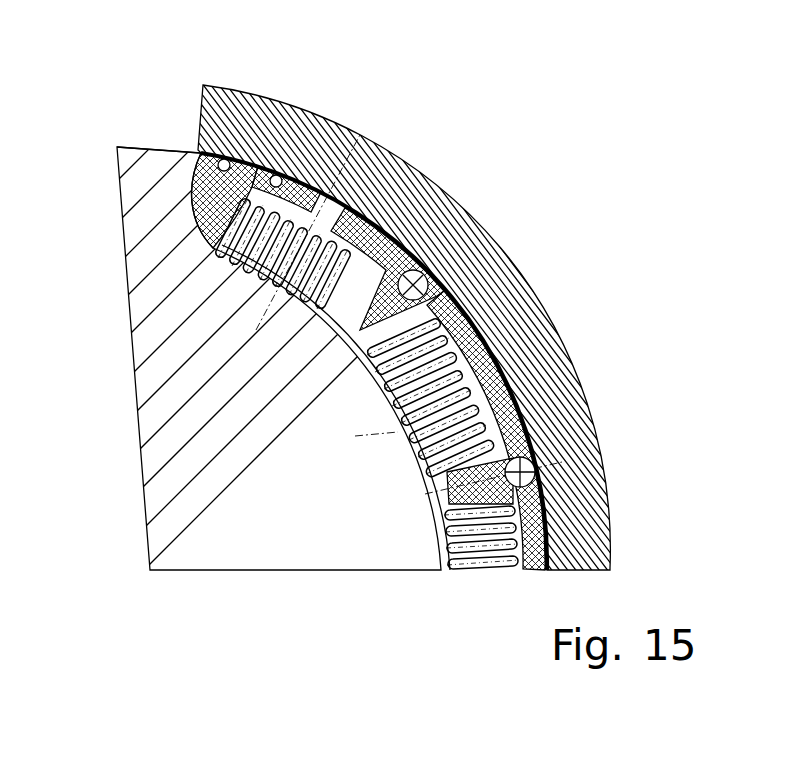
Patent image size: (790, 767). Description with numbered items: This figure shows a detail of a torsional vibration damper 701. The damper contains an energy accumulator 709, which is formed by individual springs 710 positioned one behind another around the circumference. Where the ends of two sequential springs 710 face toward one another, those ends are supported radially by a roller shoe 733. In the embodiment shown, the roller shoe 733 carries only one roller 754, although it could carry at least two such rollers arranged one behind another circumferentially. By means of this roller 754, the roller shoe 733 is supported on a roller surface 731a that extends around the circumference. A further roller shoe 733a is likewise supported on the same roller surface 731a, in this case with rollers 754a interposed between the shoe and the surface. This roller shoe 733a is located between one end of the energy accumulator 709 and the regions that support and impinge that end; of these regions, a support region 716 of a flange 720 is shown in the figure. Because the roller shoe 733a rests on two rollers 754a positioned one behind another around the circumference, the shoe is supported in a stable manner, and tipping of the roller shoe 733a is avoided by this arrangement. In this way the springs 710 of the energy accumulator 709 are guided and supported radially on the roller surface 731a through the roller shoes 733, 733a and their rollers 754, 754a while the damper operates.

The torsional vibration damper 701 is at (471, 184).
The energy accumulator 709 is at (418, 467).
The springs 710 is at (215, 272).
The support region 716 is at (159, 172).
The flange 720 is at (268, 493).
The roller surface 731a is at (490, 370).
The roller shoe 733 is at (383, 240).
The roller shoe 733a is at (262, 172).
The roller 754 is at (430, 280).
The rollers 754a is at (225, 158).